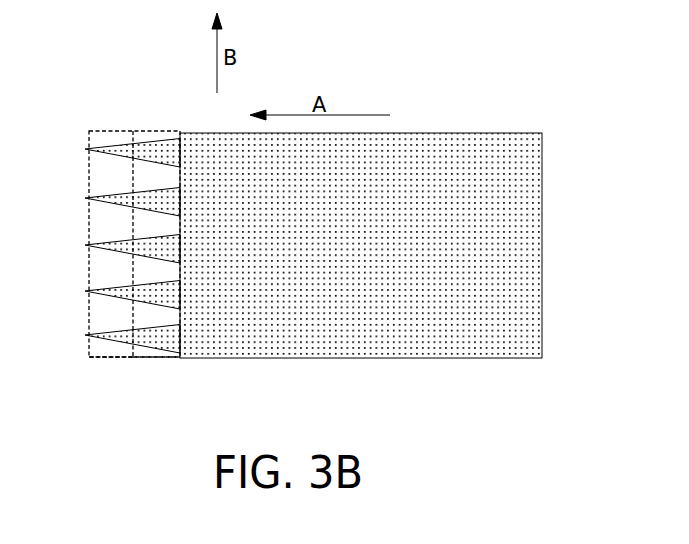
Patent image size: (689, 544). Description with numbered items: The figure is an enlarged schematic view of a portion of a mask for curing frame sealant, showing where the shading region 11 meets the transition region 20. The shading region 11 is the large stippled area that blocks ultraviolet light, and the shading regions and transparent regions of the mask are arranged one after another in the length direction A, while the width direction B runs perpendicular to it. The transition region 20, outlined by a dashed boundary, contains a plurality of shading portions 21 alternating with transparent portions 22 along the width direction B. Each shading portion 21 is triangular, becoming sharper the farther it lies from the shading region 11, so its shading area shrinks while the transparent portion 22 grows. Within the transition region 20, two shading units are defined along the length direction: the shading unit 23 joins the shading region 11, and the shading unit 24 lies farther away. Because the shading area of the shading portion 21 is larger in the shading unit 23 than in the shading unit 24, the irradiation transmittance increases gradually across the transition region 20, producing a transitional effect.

The shading region 11 is at (390, 334).
The transition region 20 is at (107, 101).
The shading portion 21 is at (167, 145).
The transparent portion 22 is at (122, 168).
The shading unit 23 is at (160, 371).
The shading unit 24 is at (101, 367).